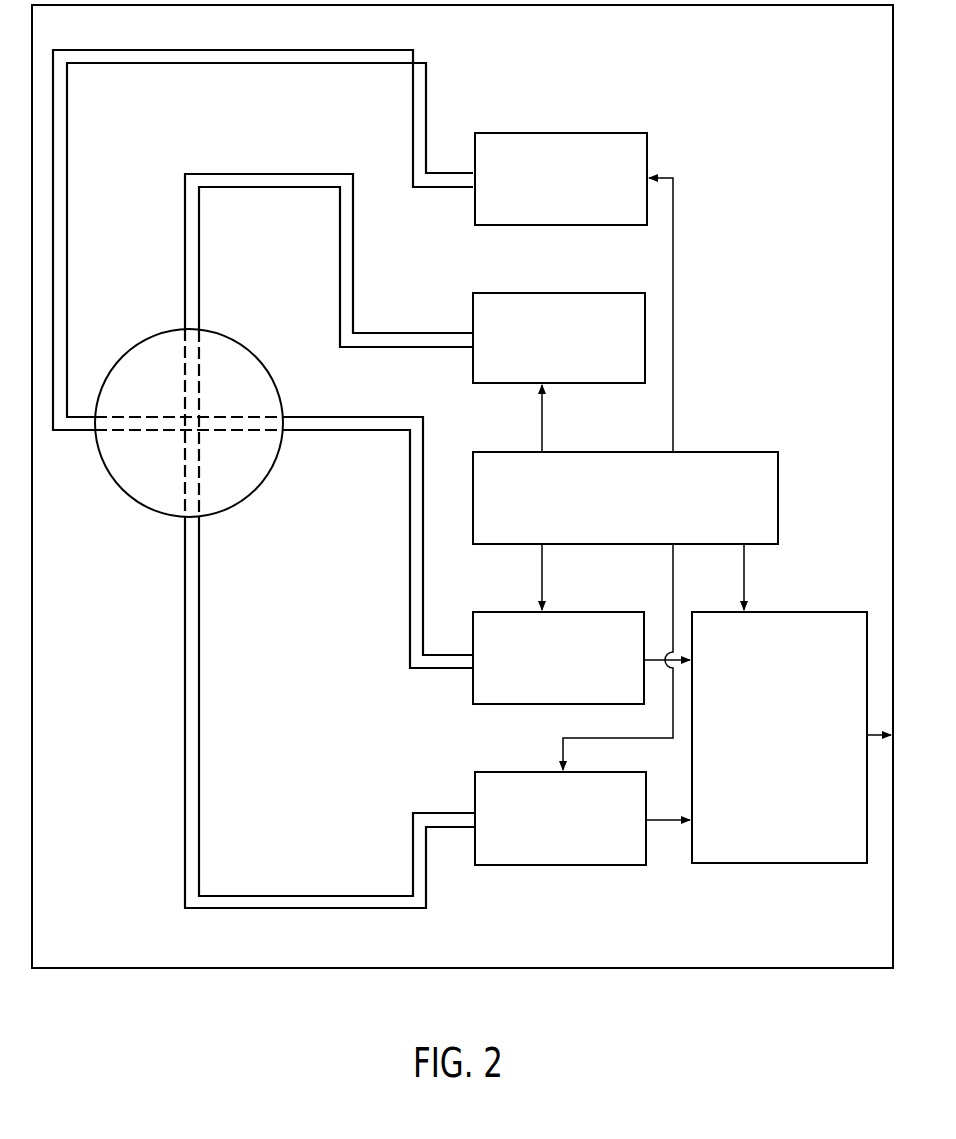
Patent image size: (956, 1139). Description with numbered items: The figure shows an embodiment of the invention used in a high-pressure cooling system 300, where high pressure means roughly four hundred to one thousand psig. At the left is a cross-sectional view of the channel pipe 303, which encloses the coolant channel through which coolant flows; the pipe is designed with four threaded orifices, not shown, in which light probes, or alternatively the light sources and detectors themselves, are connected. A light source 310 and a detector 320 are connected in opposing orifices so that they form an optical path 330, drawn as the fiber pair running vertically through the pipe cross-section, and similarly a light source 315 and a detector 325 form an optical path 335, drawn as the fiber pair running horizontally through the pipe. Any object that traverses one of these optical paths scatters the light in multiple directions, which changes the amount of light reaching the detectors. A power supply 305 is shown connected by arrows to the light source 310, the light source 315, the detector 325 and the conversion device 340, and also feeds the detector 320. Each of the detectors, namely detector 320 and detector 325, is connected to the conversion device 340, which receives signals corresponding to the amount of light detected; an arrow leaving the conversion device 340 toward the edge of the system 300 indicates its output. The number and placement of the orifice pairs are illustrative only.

The high-pressure cooling system 300 is at (462, 486).
The channel pipe 303 is at (281, 397).
The power supply 305 is at (625, 474).
The light source 310 is at (559, 338).
The light source 315 is at (561, 179).
The detector 320 is at (582, 818).
The detector 325 is at (581, 658).
The optical path 330 is at (198, 386).
The optical path 335 is at (163, 431).
The conversion device 340 is at (791, 737).